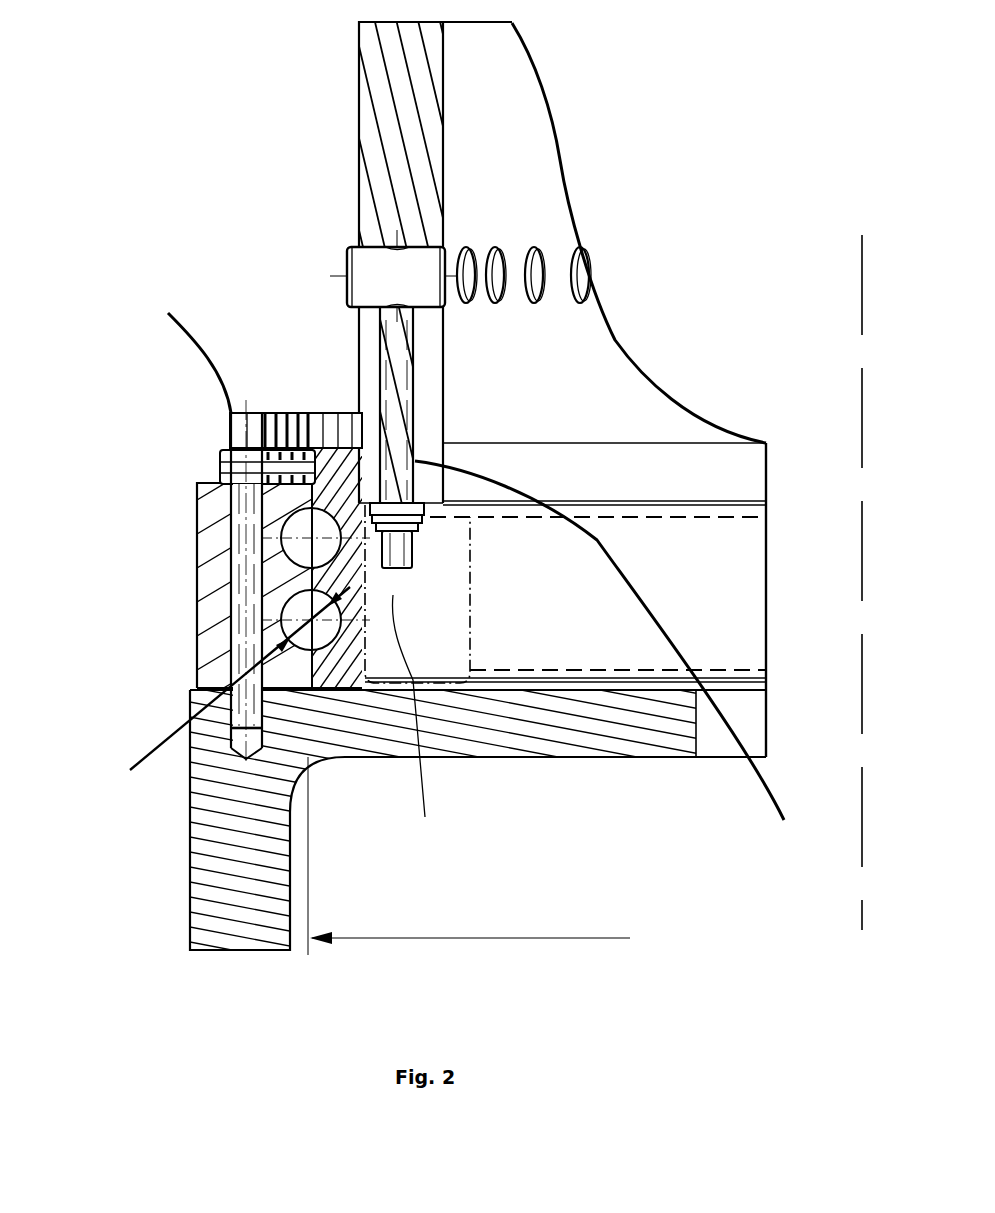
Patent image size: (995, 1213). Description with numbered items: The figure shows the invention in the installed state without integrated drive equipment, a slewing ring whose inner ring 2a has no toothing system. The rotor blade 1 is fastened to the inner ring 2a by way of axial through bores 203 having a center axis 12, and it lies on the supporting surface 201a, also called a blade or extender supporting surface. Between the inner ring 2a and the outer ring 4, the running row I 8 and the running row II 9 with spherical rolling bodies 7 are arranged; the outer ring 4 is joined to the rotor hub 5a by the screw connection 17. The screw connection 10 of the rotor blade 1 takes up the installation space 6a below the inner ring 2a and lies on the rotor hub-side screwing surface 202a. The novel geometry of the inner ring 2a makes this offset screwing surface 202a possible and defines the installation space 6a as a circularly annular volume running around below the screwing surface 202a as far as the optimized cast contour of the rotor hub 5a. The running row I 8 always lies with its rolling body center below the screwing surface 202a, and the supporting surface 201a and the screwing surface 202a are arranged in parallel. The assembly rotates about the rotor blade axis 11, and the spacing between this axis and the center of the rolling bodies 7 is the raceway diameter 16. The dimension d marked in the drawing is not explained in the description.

The rotor blade 1 is at (428, 190).
The inner ring 2a is at (613, 468).
The outer ring 4 is at (209, 480).
The rotor hub 5a is at (450, 730).
The installation space 6a is at (445, 632).
The rolling bodies 7 is at (305, 607).
The running row I 8 is at (282, 617).
The running row II 9 is at (200, 553).
The screw connection 10 is at (410, 573).
The rotor blade axis 11 is at (862, 395).
The center axis 12 is at (413, 725).
The raceway diameter 16 is at (469, 856).
The screw connection 17 is at (191, 346).
The supporting surface 201a is at (357, 400).
The screwing surface 202a is at (437, 517).
The axial through bores 203 is at (609, 663).
The distance d is at (233, 678).